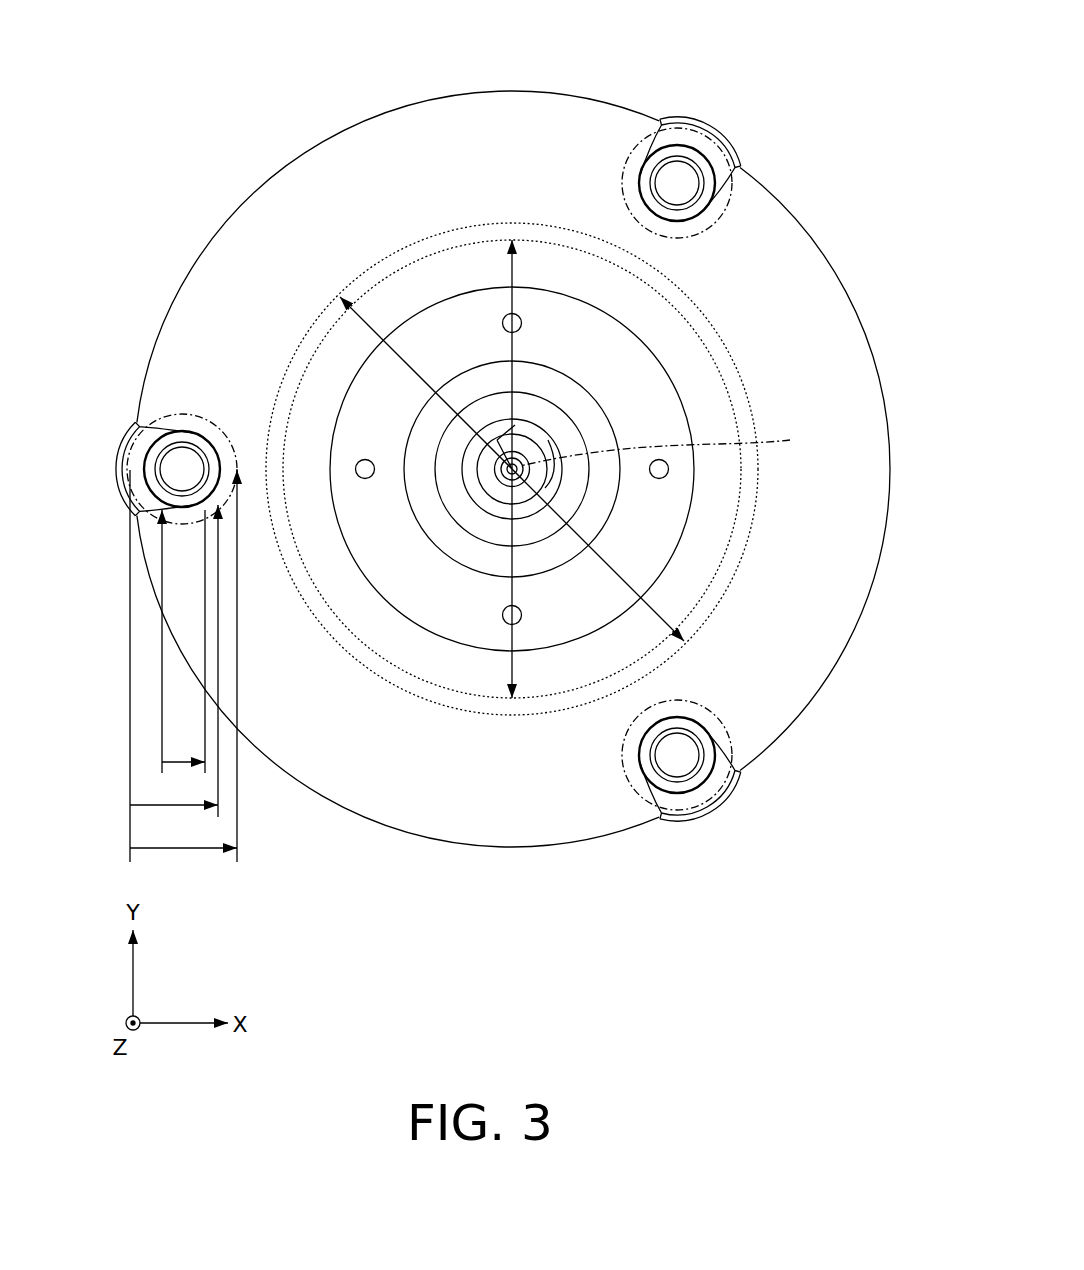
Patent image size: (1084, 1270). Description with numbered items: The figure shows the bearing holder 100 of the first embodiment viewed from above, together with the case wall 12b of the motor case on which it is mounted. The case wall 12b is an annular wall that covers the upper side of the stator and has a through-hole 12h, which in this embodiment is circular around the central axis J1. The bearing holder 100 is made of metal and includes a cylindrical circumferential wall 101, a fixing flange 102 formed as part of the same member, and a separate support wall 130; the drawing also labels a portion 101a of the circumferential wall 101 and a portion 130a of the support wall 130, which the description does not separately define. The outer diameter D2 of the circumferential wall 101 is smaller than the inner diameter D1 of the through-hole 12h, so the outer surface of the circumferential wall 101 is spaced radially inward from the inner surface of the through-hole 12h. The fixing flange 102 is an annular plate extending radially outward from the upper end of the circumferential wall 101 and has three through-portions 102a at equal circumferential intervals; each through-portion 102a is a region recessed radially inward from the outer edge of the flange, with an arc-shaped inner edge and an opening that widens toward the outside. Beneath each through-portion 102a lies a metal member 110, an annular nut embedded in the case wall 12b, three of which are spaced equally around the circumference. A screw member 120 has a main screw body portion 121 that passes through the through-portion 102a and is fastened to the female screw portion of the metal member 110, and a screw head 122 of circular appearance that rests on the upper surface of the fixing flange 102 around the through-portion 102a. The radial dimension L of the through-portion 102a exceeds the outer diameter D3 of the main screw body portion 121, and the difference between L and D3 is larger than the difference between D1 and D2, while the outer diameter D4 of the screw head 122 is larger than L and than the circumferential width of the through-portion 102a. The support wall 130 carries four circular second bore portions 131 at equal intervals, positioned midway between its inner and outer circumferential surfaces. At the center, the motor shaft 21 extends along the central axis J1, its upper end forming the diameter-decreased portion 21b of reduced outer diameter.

The bearing holder 100 is at (560, 92).
The fixing flange 102 is at (478, 103).
The through-portion 102a is at (180, 430).
The metal member 110 is at (128, 438).
The screw member 120 is at (238, 445).
The main screw body portion 121 is at (208, 425).
The screw head 122 is at (232, 420).
The support wall 130 is at (650, 390).
The bearing holder inner portion 130a is at (493, 653).
The second bore portion 131 is at (506, 316).
The circumferential wall 101 is at (420, 680).
The bottom step portion 101a is at (375, 580).
The case wall 12b is at (232, 180).
The through-hole 12h is at (450, 690).
The motor shaft 21 is at (572, 406).
The diameter-decreased portion 21b is at (537, 480).
The central axis J1 is at (664, 446).
The inner diameter of the through-hole D1 is at (617, 563).
The outer diameter of the circumferential wall D2 is at (513, 590).
The outer diameter of the main screw body portion D3 is at (183, 641).
The outer diameter of the screw head D4 is at (183, 666).
The dimension of the through-portion in the radial direction L is at (174, 666).